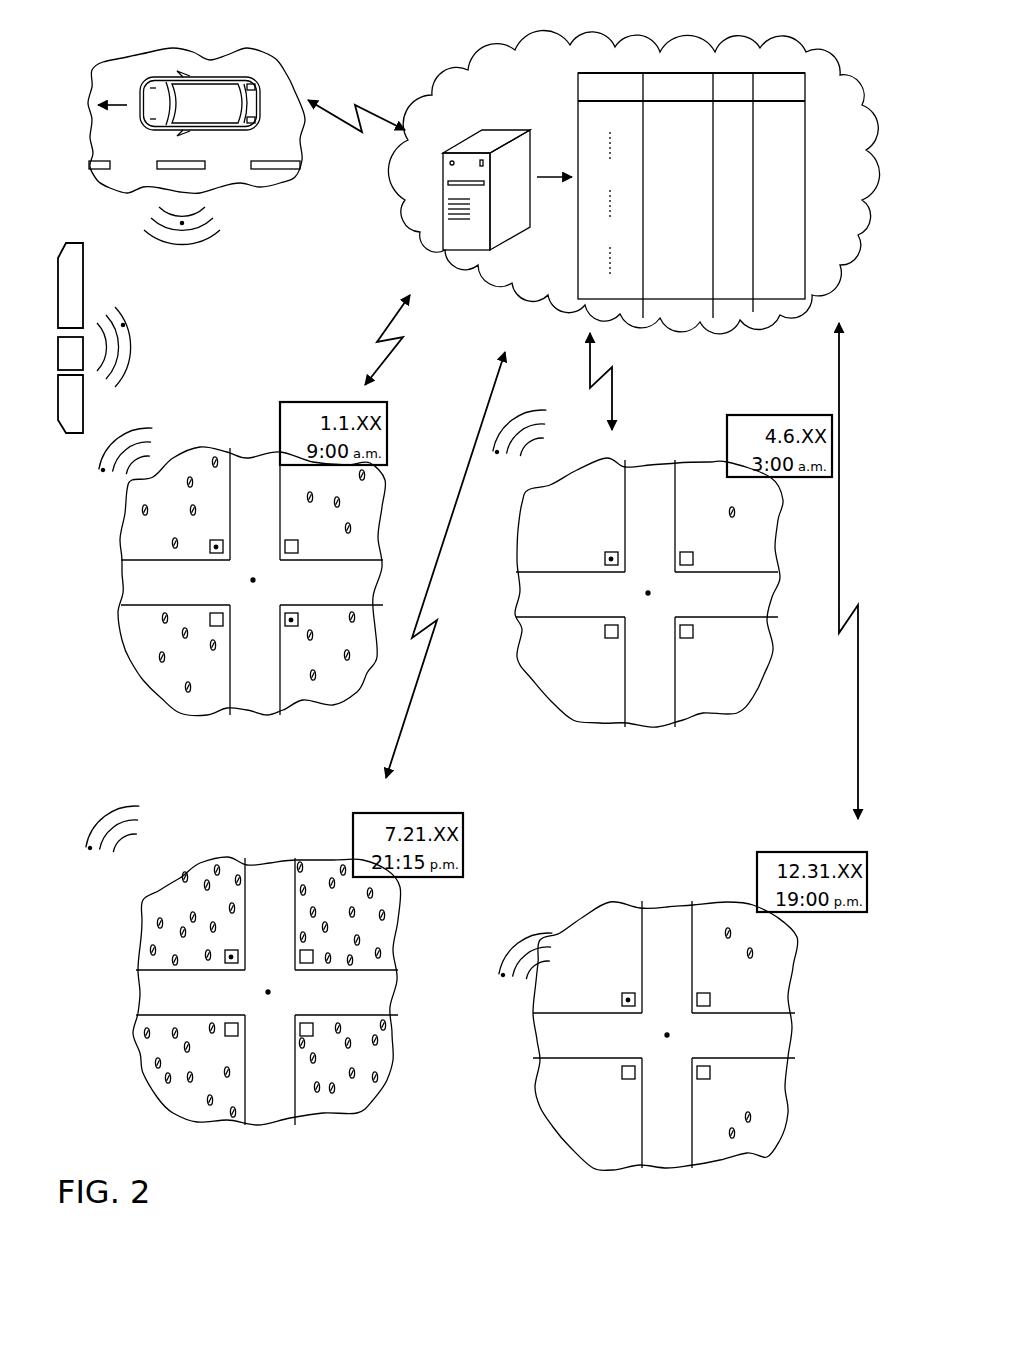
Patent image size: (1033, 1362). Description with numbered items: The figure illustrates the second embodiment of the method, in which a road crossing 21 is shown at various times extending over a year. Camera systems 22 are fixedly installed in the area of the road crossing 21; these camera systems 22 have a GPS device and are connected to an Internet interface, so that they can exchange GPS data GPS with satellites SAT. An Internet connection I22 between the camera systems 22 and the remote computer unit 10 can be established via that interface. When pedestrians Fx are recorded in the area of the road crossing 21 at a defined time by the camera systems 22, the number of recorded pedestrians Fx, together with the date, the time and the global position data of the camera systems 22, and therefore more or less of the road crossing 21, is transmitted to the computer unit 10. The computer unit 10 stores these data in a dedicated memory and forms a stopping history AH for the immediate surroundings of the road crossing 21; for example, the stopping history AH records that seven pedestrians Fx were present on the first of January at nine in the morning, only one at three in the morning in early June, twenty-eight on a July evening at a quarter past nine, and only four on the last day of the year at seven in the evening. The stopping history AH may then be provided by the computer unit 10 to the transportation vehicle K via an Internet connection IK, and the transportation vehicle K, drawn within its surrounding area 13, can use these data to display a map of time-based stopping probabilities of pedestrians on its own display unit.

The transportation vehicle K is at (225, 106).
The vehicle surroundings / road environment 13 is at (271, 63).
The remote computer unit 10 is at (462, 140).
The Internet connection IK is at (340, 117).
The stopping history AH is at (808, 94).
The satellites SAT is at (73, 255).
The GPS data GPS is at (124, 325).
The Internet connection I22 is at (394, 350).
The road crossing 21 is at (253, 578).
The camera systems 22 is at (217, 548).
The pedestrians Fx is at (195, 516).